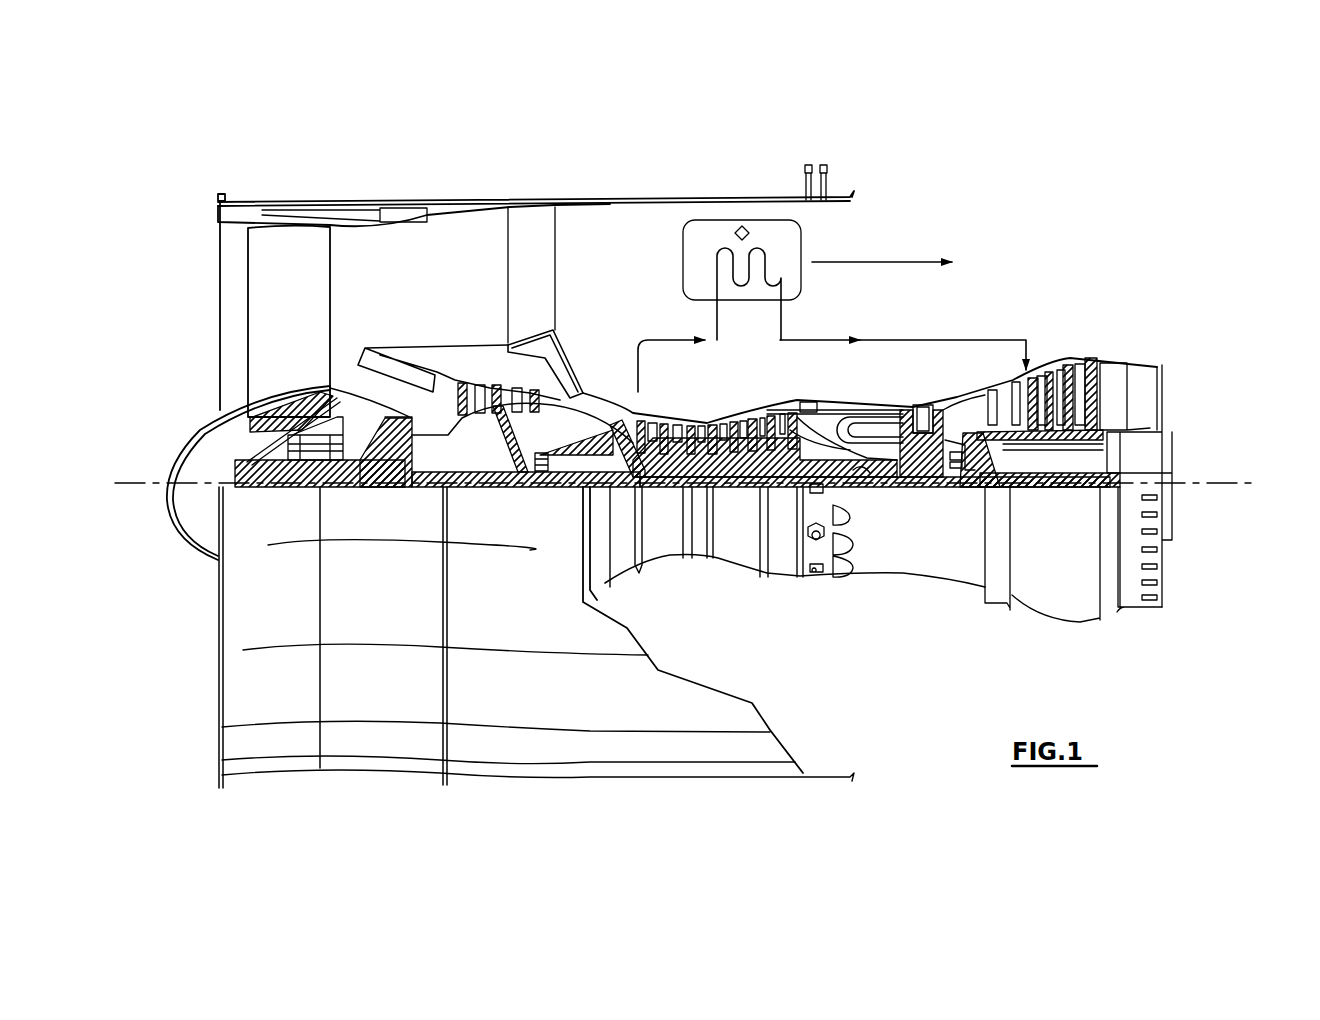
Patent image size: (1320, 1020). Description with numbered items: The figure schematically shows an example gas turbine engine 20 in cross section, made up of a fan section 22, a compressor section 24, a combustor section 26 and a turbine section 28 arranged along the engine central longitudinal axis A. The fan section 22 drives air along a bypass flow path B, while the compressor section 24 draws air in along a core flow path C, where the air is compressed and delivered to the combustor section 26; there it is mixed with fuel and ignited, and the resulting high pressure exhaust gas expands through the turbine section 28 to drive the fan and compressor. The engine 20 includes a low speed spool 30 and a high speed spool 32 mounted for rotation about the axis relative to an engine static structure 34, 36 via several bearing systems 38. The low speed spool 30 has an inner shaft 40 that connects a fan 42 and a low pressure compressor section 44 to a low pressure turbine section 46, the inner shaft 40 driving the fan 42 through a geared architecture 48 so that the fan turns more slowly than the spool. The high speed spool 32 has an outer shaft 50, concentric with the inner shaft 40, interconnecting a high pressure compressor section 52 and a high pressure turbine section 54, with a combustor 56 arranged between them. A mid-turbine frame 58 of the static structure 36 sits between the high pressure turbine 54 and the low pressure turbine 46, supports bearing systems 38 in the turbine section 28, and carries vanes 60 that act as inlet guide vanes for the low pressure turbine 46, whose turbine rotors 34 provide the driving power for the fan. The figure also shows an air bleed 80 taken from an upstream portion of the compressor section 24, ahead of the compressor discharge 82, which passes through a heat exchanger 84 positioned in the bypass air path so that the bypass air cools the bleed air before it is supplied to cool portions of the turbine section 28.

The gas turbine engine 20 is at (868, 248).
The fan section 22 is at (428, 169).
The compressor section 24 is at (843, 312).
The combustor section 26 is at (945, 312).
The turbine section 28 is at (1118, 312).
The low speed spool 30 is at (741, 497).
The high speed spool 32 is at (777, 450).
The turbine rotors 34 is at (1058, 438).
The engine static structure 36 is at (781, 585).
The bearing systems 38 is at (537, 483).
The inner shaft 40 is at (605, 485).
The fan 42 is at (305, 328).
The low pressure compressor section 44 is at (517, 390).
The low pressure turbine section 46 is at (1048, 367).
The geared architecture 48 is at (410, 470).
The outer shaft 50 is at (867, 477).
The high pressure compressor section 52 is at (715, 452).
The high pressure turbine section 54 is at (923, 403).
The combustor 56 is at (857, 427).
The mid-turbine frame 58 is at (967, 388).
The vanes 60 is at (968, 423).
The air bleed 80 is at (639, 391).
The discharge 82 is at (804, 402).
The heat exchanger 84 is at (707, 235).